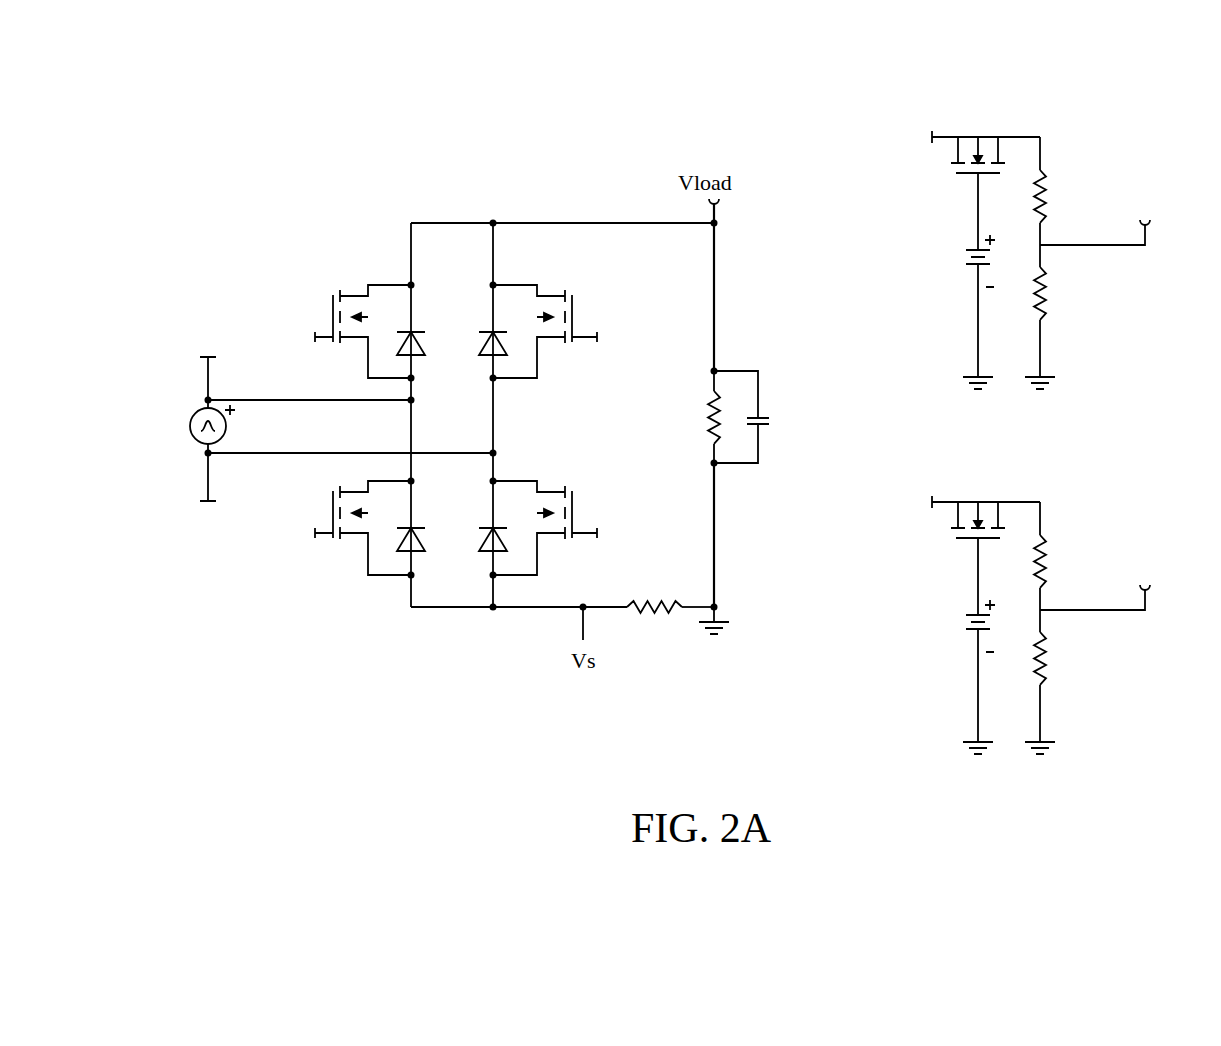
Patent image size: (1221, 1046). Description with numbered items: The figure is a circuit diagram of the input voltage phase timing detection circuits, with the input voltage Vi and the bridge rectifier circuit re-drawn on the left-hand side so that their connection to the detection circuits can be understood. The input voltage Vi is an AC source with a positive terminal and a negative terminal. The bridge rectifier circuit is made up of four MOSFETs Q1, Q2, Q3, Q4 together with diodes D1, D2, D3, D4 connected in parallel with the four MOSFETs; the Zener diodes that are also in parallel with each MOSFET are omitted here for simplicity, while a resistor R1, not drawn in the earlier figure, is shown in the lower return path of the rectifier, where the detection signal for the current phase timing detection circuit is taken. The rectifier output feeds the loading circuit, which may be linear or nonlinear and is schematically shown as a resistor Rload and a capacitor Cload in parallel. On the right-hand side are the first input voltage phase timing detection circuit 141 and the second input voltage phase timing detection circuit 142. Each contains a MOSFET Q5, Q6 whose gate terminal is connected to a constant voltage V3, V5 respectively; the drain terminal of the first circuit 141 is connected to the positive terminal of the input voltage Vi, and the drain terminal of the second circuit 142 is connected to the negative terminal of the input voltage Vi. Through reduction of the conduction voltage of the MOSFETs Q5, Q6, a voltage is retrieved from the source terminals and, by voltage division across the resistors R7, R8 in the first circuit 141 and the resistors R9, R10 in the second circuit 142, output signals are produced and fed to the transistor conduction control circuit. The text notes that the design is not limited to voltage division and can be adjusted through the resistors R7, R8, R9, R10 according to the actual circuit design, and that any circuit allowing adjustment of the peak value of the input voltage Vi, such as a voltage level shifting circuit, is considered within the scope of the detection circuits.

The first input voltage phase timing detection circuit 141 is at (1033, 229).
The second input voltage phase timing detection circuit 142 is at (1034, 587).
The MOSFET Q1 is at (331, 320).
The MOSFET Q2 is at (579, 320).
The MOSFET Q3 is at (331, 517).
The MOSFET Q4 is at (579, 517).
The MOSFET Q5 is at (962, 179).
The MOSFET Q6 is at (962, 544).
The first diode D1 is at (420, 330).
The second diode D2 is at (484, 330).
The third diode D3 is at (420, 526).
The fourth diode D4 is at (484, 526).
The resistor R1 is at (654, 593).
The resistor R7 is at (1055, 180).
The resistor R8 is at (1050, 306).
The resistor R9 is at (1055, 545).
The resistor R10 is at (1056, 671).
The constant voltage V3 is at (966, 312).
The constant voltage V5 is at (966, 677).
The input voltage Vi is at (189, 430).
The resistor Rload is at (686, 417).
The capacitor Cload is at (771, 417).